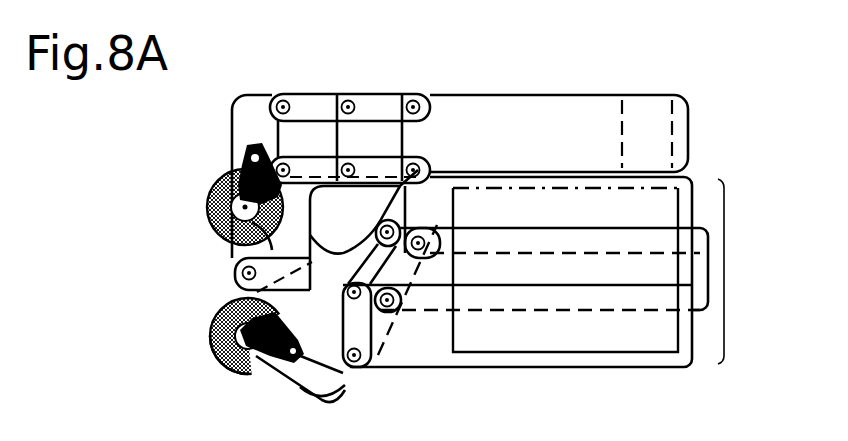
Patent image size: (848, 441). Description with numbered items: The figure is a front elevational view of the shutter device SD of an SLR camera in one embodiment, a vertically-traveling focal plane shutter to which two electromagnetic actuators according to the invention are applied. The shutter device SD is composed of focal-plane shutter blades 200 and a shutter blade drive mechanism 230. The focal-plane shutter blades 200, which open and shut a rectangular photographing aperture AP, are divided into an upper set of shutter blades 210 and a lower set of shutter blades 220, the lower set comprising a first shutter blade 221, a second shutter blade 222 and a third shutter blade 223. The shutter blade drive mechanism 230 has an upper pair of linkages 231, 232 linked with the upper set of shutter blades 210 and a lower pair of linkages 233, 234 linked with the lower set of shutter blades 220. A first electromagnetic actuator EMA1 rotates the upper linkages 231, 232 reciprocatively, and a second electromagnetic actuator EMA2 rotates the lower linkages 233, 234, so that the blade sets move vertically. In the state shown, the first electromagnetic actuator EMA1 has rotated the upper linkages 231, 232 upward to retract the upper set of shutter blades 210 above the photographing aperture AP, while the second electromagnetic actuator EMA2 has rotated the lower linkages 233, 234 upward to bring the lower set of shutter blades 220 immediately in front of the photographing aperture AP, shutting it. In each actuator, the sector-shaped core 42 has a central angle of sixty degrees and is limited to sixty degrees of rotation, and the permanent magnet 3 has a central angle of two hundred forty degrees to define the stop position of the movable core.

The focal-plane shutter blades 200 is at (722, 176).
The upper set of shutter blades 210 is at (690, 128).
The lower set of shutter blades 220 is at (726, 258).
The first shutter blade 221 is at (512, 205).
The second shutter blade 222 is at (578, 268).
The third shutter blade 223 is at (658, 362).
The shutter blade drive mechanism 230 is at (273, 86).
The upper linkage 231 is at (320, 110).
The upper linkage 232 is at (372, 165).
The lower linkage 233 is at (315, 268).
The lower linkage 234 is at (352, 377).
The sector-shaped core 42 is at (232, 172).
The permanent magnet 3 is at (226, 229).
The photographing aperture AP is at (488, 192).
The shutter device SD is at (614, 84).
The first electromagnetic actuator EMA1 is at (184, 189).
The second electromagnetic actuator EMA2 is at (184, 345).